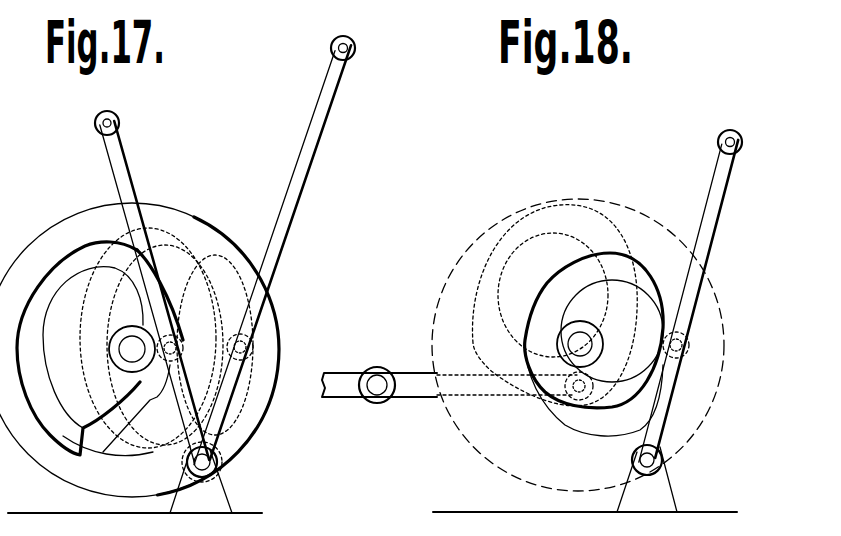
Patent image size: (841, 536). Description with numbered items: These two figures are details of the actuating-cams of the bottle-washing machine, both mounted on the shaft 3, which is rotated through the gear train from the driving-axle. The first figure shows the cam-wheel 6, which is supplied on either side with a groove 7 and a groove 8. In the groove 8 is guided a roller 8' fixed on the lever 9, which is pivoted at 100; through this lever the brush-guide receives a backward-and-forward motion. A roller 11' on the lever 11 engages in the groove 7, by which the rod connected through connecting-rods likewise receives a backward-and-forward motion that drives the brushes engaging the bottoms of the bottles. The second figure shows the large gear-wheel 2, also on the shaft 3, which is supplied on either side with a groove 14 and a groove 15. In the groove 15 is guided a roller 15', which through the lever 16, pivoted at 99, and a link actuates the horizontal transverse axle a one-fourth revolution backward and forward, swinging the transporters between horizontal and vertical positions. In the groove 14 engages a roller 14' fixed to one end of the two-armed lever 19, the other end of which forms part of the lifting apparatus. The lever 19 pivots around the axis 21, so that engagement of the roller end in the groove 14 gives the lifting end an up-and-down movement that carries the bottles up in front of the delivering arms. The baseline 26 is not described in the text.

In FIG. 18, the gear-wheel 2 is at (650, 220).
In FIG. 17, the shaft 3 is at (137, 347).
In FIG. 18, the shaft 3 is at (580, 344).
In FIG. 17, the cam-wheel 6 is at (218, 237).
In FIG. 17, the groove 7 is at (167, 243).
In FIG. 17, the groove 8 is at (100, 349).
In FIG. 17, the roller 8' is at (185, 343).
In FIG. 17, the lever 9 is at (118, 160).
In FIG. 17, the lever 11 is at (274, 250).
In FIG. 17, the roller 11' is at (272, 337).
In FIG. 17, the pivot 100 is at (222, 466).
In FIG. 18, the groove 14 is at (554, 286).
In FIG. 18, the roller 14' is at (591, 377).
In FIG. 18, the groove 15 is at (570, 378).
In FIG. 18, the roller 15' is at (691, 344).
In FIG. 18, the lever 16 is at (720, 206).
In FIG. 18, the two-armed lever 19 is at (345, 388).
In FIG. 18, the axis 21 is at (377, 387).
In FIG. 18, the pivot 99 is at (662, 468).
In FIG. 18, the base line 26 is at (589, 524).